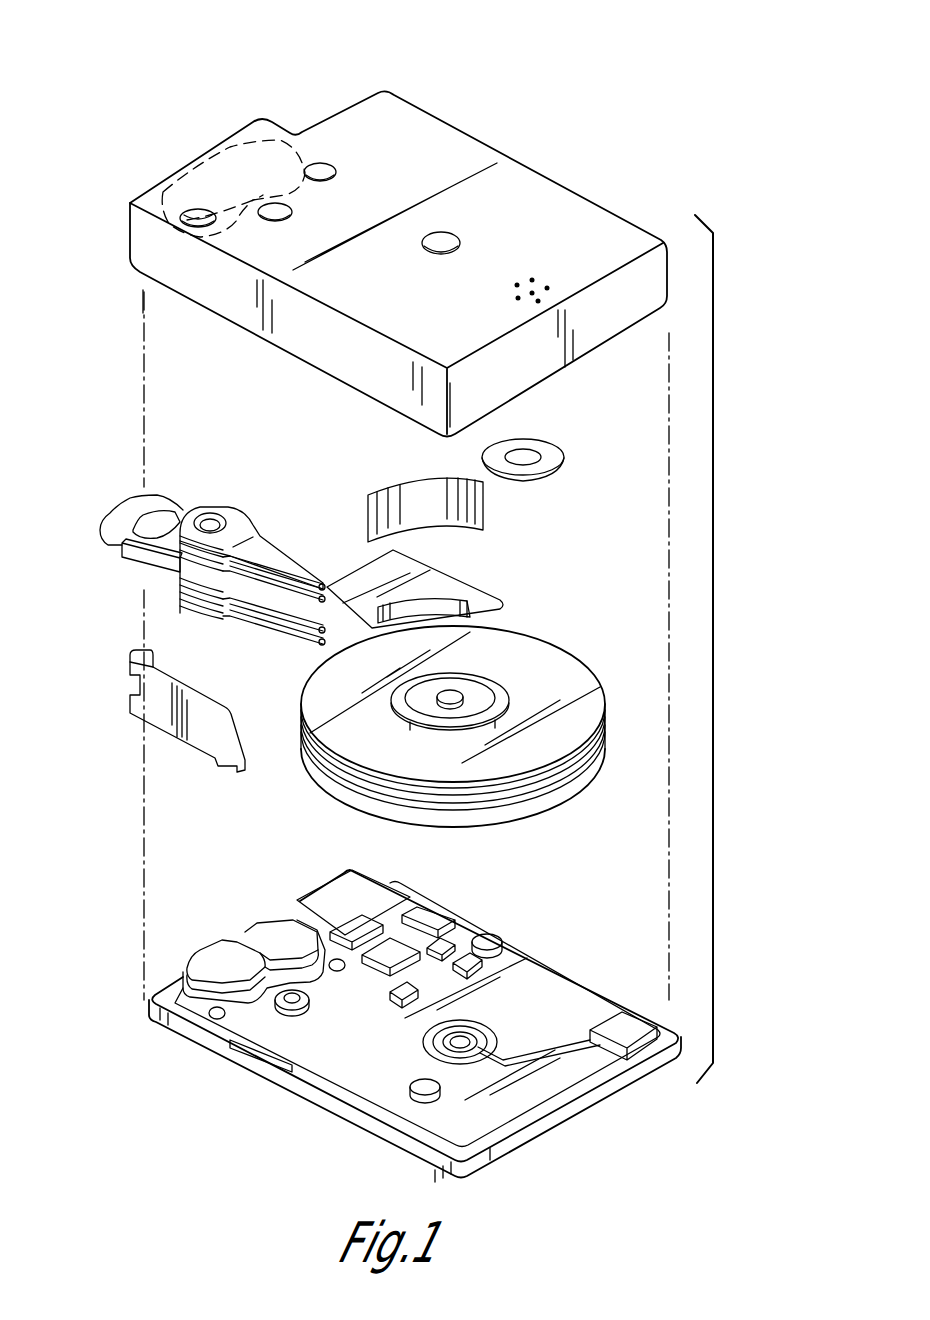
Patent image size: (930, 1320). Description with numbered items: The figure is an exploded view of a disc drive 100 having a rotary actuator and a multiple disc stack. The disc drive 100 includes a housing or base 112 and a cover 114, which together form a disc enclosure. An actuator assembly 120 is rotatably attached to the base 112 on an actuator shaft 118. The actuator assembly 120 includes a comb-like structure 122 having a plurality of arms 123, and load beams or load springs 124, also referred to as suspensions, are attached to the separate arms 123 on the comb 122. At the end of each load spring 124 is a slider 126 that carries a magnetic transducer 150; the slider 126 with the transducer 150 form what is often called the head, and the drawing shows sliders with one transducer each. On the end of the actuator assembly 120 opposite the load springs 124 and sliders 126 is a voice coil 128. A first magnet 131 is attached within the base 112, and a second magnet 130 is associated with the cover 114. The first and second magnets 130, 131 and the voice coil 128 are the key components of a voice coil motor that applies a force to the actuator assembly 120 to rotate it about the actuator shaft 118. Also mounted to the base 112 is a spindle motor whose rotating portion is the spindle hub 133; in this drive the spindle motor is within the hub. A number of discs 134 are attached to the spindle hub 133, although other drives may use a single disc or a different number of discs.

The disc drive 100 is at (533, 62).
The base 112 is at (578, 995).
The cover 114 is at (542, 195).
The actuator shaft 118 is at (210, 514).
The actuator assembly 120 is at (162, 568).
The comb-like structure 122 is at (230, 618).
The arms 123 is at (260, 540).
The load springs 124 is at (280, 560).
The slider 126 is at (322, 584).
The voice coil 128 is at (123, 522).
The second magnet 130 is at (225, 158).
The first magnet 131 is at (208, 965).
The spindle hub 133 is at (455, 690).
The discs 134 is at (568, 672).
The magnetic transducer 150 is at (338, 585).